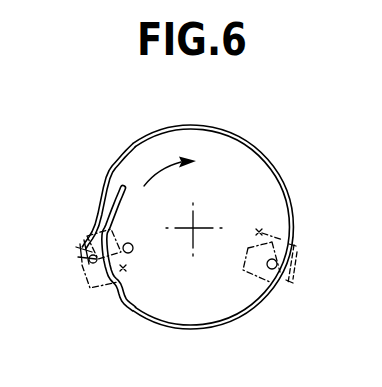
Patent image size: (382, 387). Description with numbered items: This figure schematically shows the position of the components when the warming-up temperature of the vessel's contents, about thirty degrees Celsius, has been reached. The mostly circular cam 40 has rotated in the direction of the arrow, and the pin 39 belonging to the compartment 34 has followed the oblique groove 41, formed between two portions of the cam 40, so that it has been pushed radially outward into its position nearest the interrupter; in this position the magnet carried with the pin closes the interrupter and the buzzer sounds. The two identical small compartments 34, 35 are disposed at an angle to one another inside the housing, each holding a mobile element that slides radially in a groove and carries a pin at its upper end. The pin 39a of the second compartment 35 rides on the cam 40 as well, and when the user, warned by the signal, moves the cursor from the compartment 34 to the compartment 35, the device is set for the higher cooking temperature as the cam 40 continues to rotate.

The compartment 34 is at (127, 271).
The compartment 35 is at (258, 228).
The pin 39 is at (85, 250).
The pin 39a is at (265, 284).
The cam 40 is at (232, 138).
The oblique groove 41 is at (108, 192).